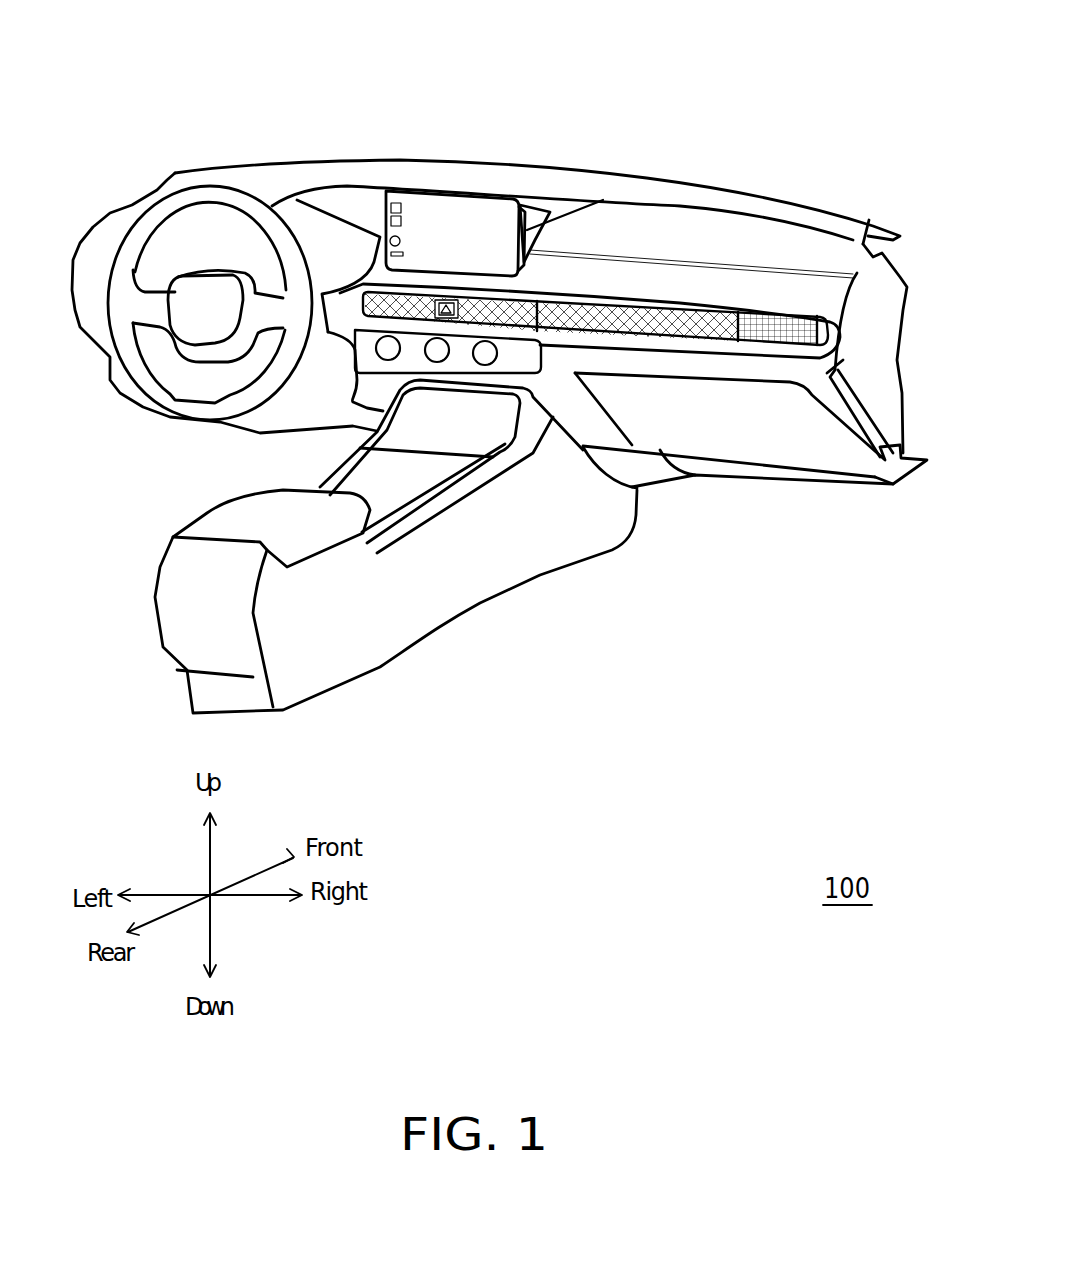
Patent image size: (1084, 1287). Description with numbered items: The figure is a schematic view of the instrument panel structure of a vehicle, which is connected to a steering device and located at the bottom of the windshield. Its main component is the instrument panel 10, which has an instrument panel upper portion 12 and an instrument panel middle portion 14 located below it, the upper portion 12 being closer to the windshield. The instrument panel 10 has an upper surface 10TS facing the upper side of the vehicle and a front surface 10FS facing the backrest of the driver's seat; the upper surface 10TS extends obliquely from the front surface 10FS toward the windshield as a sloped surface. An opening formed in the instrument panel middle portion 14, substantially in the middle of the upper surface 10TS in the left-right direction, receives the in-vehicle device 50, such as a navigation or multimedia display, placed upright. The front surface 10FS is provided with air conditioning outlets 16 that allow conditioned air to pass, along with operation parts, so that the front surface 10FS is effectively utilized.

The instrument panel 10 is at (499, 436).
The instrument panel upper portion 12 is at (603, 227).
The instrument panel middle portion 14 is at (539, 214).
The air conditioning outlets 16 is at (392, 308).
The in-vehicle device 50 is at (427, 217).
The upper surface 10TS is at (650, 216).
The front surface 10FS is at (696, 336).